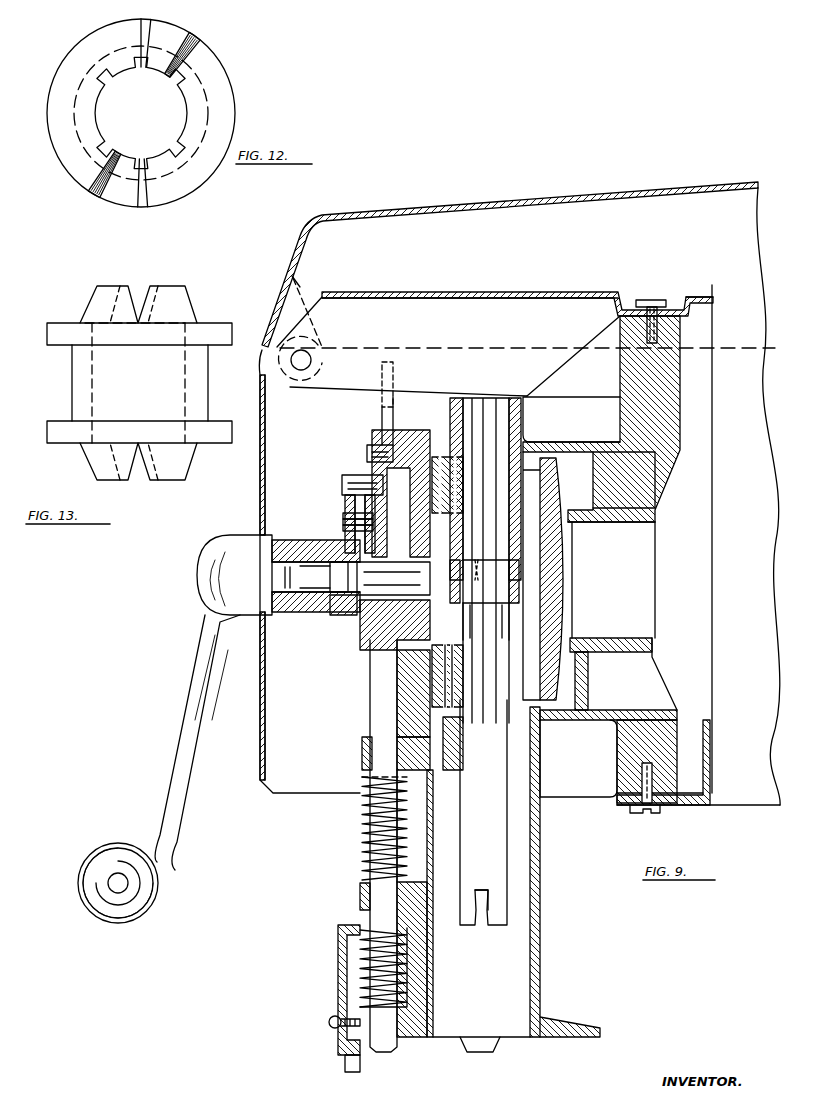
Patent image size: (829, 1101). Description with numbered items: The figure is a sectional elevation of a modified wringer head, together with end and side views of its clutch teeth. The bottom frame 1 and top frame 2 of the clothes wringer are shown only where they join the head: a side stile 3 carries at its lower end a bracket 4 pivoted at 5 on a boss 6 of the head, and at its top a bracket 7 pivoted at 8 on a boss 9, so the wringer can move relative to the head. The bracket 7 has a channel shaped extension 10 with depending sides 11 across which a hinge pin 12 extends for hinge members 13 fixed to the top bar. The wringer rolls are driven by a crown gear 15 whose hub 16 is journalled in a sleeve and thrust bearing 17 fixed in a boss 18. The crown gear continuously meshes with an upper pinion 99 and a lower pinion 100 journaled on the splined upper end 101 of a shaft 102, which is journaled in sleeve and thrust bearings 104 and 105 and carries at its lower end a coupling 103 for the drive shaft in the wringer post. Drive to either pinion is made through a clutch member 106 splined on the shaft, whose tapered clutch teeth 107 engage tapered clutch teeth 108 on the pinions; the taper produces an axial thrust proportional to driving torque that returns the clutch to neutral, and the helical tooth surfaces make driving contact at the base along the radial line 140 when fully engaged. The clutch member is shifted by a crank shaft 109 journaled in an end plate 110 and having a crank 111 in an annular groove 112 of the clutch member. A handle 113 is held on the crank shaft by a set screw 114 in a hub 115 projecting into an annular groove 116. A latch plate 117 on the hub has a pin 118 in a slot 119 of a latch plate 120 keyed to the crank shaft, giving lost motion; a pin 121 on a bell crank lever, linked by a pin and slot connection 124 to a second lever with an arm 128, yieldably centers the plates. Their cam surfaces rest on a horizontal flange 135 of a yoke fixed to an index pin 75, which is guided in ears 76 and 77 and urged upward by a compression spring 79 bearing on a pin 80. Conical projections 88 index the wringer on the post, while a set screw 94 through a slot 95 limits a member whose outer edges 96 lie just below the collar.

In FIG. 9, the bottom frame 1 is at (740, 808).
In FIG. 9, the top frame 2 is at (676, 184).
In FIG. 9, the side stile 3 is at (710, 588).
In FIG. 9, the bracket 4 is at (686, 808).
In FIG. 9, the pivot 5 is at (637, 812).
In FIG. 9, the boss 6 is at (618, 770).
In FIG. 9, the bracket 7 is at (695, 297).
In FIG. 9, the pivot 8 is at (657, 302).
In FIG. 9, the boss 9 is at (676, 340).
In FIG. 9, the channel shaped extension 10 is at (497, 296).
In FIG. 9, the depending sides 11 is at (452, 300).
In FIG. 9, the hinge pin 12 is at (312, 356).
In FIG. 9, the hinge members 13 is at (300, 298).
In FIG. 9, the crown gear 15 is at (560, 458).
In FIG. 9, the hub 16 is at (648, 542).
In FIG. 9, the sleeve and thrust bearing 17 is at (622, 518).
In FIG. 9, the boss 18 is at (605, 510).
In FIG. 9, the index pin 75 is at (370, 712).
In FIG. 9, the ear 76 is at (362, 752).
In FIG. 9, the ear 77 is at (360, 893).
In FIG. 9, the compression spring 79 is at (362, 848).
In FIG. 9, the pin 80 is at (362, 779).
In FIG. 9, the conical projections 88 is at (463, 1052).
In FIG. 9, the set screw 94 is at (330, 1026).
In FIG. 9, the slot 95 is at (338, 1005).
In FIG. 9, the outer edges 96 is at (347, 1072).
In FIG. 9, the upper pinion 99 is at (532, 443).
In FIG. 9, the lower pinion 100 is at (548, 722).
In FIG. 9, the splined upper end 101 is at (498, 398).
In FIG. 9, the shaft 102 is at (462, 858).
In FIG. 9, the coupling 103 is at (482, 912).
In FIG. 9, the sleeve and thrust bearing 104 is at (522, 412).
In FIG. 9, the sleeve and thrust bearing 105 is at (536, 760).
In FIG. 12, the clutch member 106 is at (200, 188).
In FIG. 13, the clutch member 106 is at (218, 325).
In FIG. 9, the clutch member 106 is at (523, 555).
In FIG. 12, the tapered clutch teeth 107 is at (178, 35).
In FIG. 13, the tapered clutch teeth 107 is at (165, 292).
In FIG. 9, the tapered clutch teeth 107 is at (497, 542).
In FIG. 9, the tapered clutch teeth 108 is at (476, 527).
In FIG. 9, the crank shaft 109 is at (362, 628).
In FIG. 9, the end plate 110 is at (395, 688).
In FIG. 9, the crank 111 is at (452, 604).
In FIG. 13, the annular groove 112 is at (62, 348).
In FIG. 9, the handle 113 is at (100, 852).
In FIG. 9, the set screw 114 is at (318, 613).
In FIG. 9, the hub 115 is at (295, 614).
In FIG. 9, the annular groove 116 is at (310, 545).
In FIG. 9, the latch plate 117 is at (345, 503).
In FIG. 9, the pin 118 is at (376, 518).
In FIG. 9, the slot 119 is at (374, 527).
In FIG. 9, the latch plate 120 is at (375, 510).
In FIG. 9, the pin 121 is at (352, 476).
In FIG. 9, the pin and slot connection 124 is at (366, 451).
In FIG. 9, the arm 128 is at (380, 416).
In FIG. 9, the horizontal flange 135 is at (372, 572).
In FIG. 12, the radial line 140 is at (141, 35).